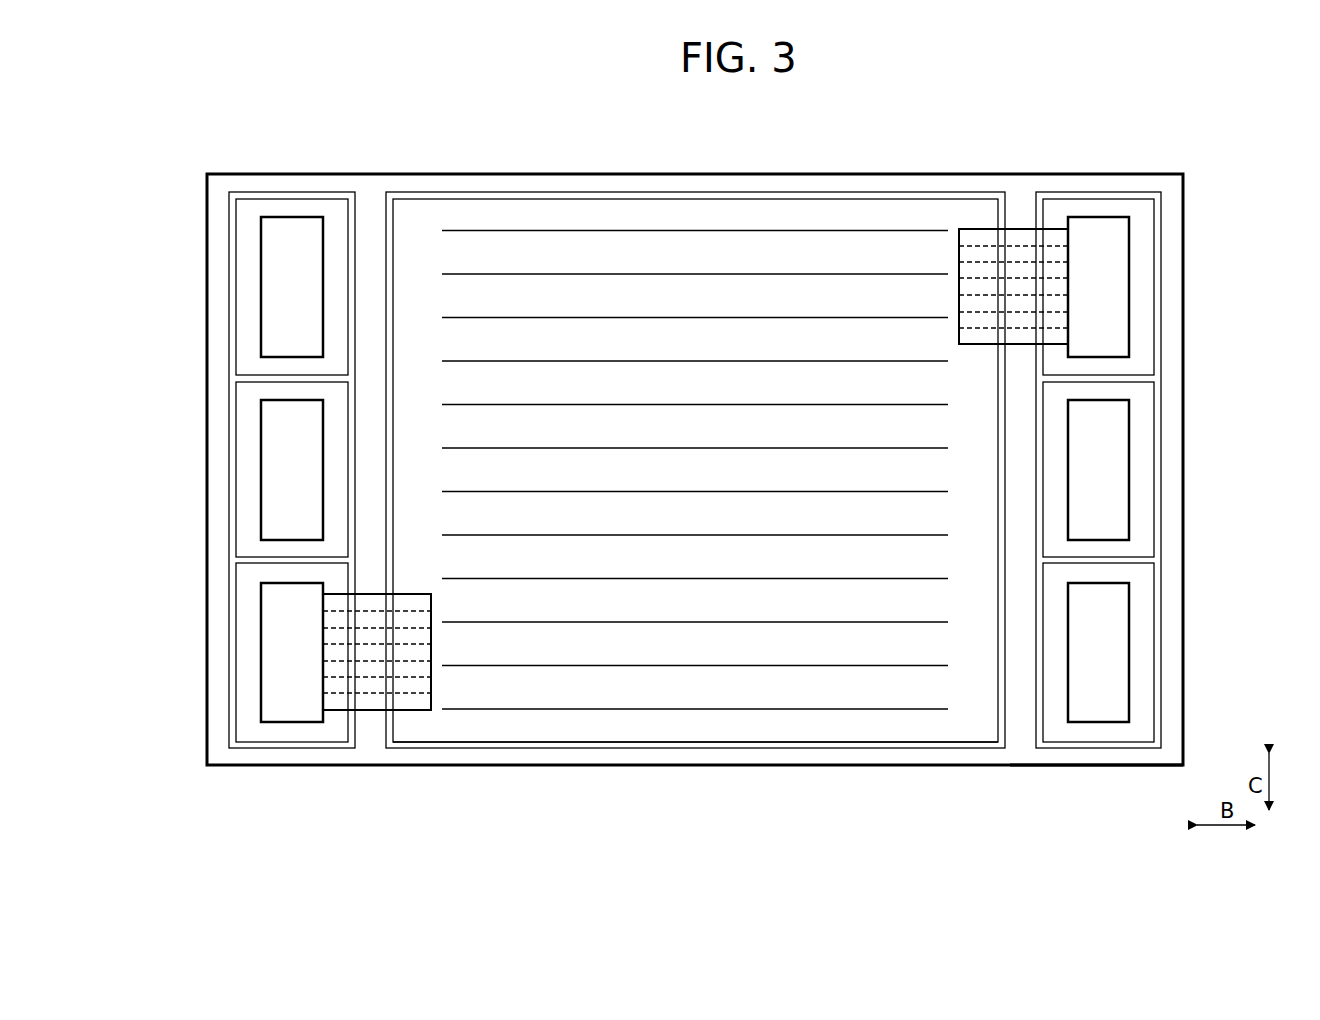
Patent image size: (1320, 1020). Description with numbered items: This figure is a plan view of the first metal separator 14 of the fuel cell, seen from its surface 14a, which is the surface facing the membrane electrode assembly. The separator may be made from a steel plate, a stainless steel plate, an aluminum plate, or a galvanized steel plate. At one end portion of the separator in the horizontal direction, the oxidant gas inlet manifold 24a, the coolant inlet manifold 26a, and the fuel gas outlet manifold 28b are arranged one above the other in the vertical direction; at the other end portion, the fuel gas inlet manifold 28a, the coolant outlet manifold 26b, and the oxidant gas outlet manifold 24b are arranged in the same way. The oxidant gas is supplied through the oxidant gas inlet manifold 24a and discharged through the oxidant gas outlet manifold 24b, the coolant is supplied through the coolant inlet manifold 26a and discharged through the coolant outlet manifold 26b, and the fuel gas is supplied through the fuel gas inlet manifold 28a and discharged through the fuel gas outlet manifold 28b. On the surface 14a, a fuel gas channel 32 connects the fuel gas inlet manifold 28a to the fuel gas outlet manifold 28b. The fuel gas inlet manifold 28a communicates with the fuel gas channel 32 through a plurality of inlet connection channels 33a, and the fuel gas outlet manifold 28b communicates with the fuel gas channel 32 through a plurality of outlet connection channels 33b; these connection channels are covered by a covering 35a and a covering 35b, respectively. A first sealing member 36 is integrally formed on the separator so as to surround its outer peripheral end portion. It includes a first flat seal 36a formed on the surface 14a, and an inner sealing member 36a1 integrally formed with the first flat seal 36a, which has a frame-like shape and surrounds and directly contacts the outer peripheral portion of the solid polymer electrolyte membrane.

The first metal separator 14 is at (827, 109).
The surface of the first metal separator 14a is at (1018, 752).
The oxidant gas inlet manifold 24a is at (278, 258).
The oxidant gas outlet manifold 24b is at (1110, 604).
The coolant inlet manifold 26a is at (268, 416).
The coolant outlet manifold 26b is at (1122, 417).
The fuel gas inlet manifold 28a is at (1112, 242).
The fuel gas outlet manifold 28b is at (275, 614).
The fuel gas channel 32 is at (566, 275).
The inlet connection channels 33a is at (1010, 253).
The outlet connection channels 33b is at (382, 685).
The covering 35a is at (979, 236).
The covering 35b is at (411, 703).
The first sealing member 36 is at (653, 768).
The first flat seal 36a is at (762, 752).
The inner sealing member 36a1 is at (547, 742).